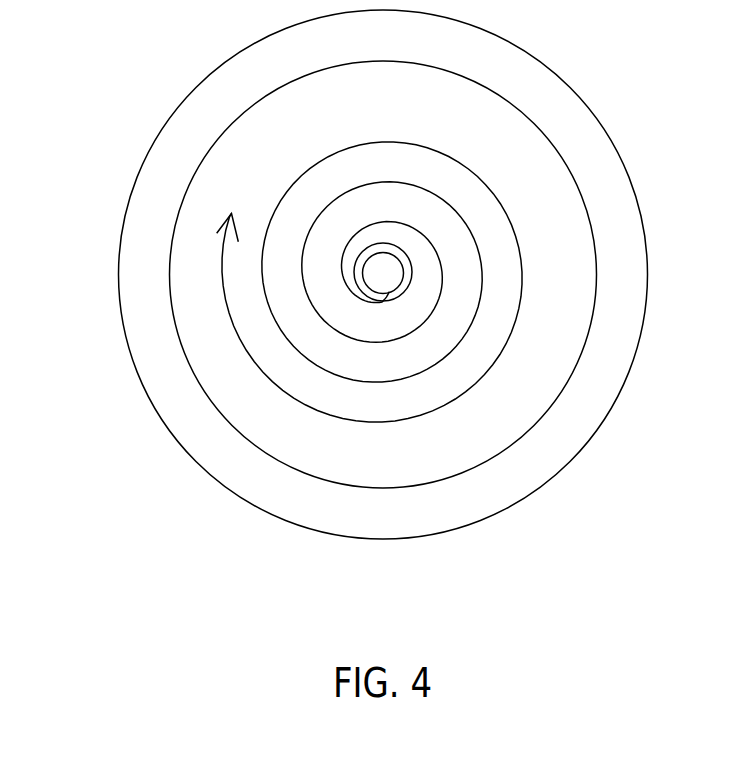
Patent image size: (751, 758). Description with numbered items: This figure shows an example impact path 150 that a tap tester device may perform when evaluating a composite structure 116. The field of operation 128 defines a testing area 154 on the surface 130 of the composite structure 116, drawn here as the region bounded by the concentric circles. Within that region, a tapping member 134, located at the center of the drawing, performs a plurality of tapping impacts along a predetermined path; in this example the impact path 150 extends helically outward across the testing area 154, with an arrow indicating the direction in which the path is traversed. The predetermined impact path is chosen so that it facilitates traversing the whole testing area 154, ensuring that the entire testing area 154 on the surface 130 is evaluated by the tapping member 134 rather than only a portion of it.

The composite structure 116 is at (725, 298).
The field of operation 128 is at (397, 110).
The surface 130 is at (725, 260).
The tapping member 134 is at (388, 293).
The impact path 150 is at (505, 176).
The testing area 154 is at (396, 464).